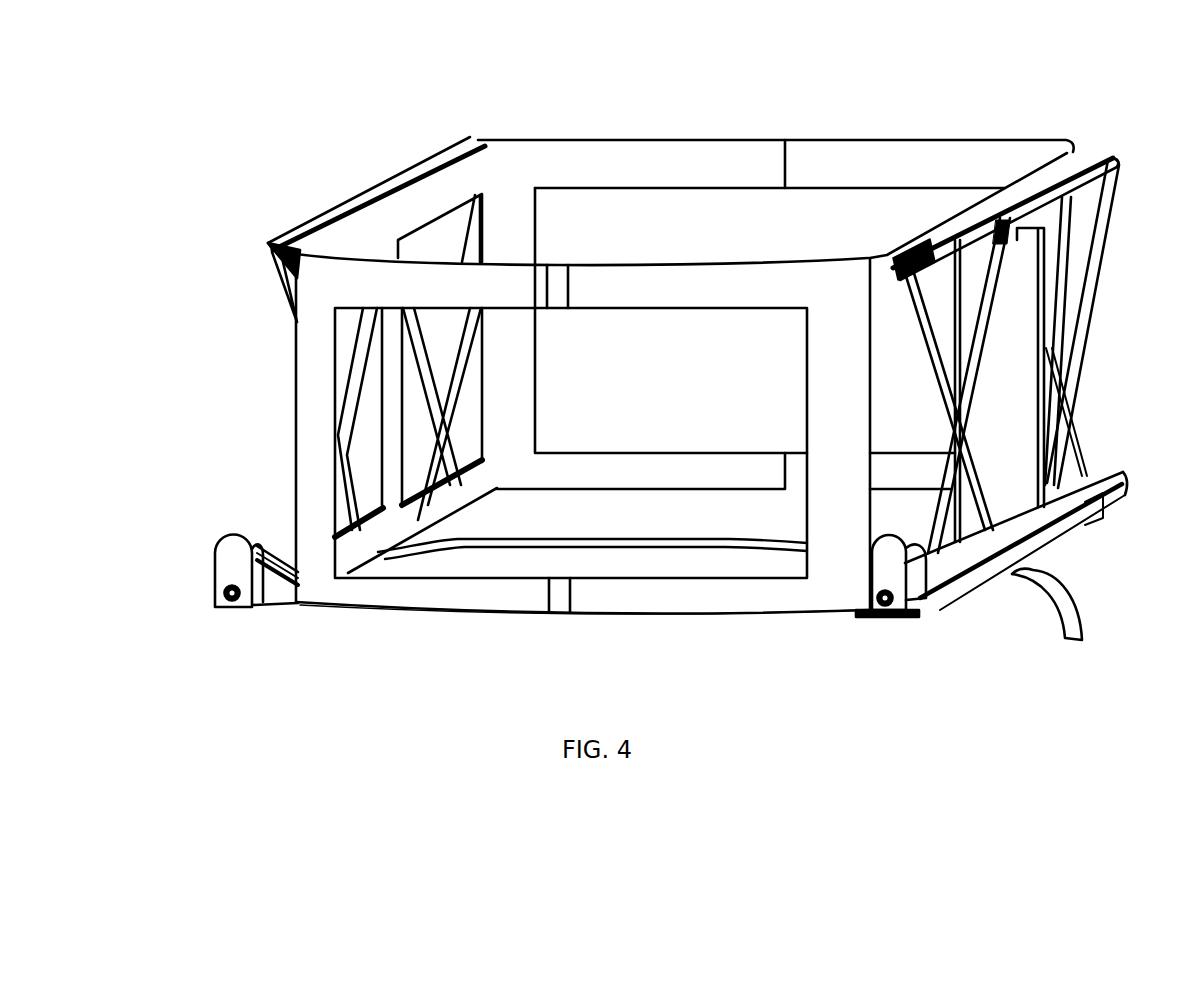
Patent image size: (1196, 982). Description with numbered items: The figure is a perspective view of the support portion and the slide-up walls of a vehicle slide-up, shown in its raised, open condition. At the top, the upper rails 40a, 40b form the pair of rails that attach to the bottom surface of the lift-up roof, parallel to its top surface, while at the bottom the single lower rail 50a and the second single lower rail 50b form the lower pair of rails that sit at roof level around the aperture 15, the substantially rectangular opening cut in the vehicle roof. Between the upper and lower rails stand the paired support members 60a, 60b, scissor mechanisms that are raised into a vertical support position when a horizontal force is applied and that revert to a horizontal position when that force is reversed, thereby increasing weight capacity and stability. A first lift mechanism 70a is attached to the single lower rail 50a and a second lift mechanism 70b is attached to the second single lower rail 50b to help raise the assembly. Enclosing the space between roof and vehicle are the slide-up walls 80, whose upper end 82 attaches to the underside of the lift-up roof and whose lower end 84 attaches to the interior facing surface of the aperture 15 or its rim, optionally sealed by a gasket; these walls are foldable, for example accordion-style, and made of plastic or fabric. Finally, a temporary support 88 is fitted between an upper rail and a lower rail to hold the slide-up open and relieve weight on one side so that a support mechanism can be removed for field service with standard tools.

The aperture 15 is at (592, 534).
The upper rail 40a is at (1096, 146).
The upper rail 40b is at (340, 203).
The single lower rail 50a is at (975, 595).
The second single lower rail 50b is at (290, 540).
The paired support member 60a is at (925, 368).
The paired support member 60b is at (1112, 232).
The first lift mechanism 70a is at (870, 583).
The second lift mechanism 70b is at (235, 533).
The slide-up walls 80 is at (568, 160).
The upper end 82 is at (855, 145).
The lower end 84 is at (605, 620).
The temporary support 88 is at (1045, 408).